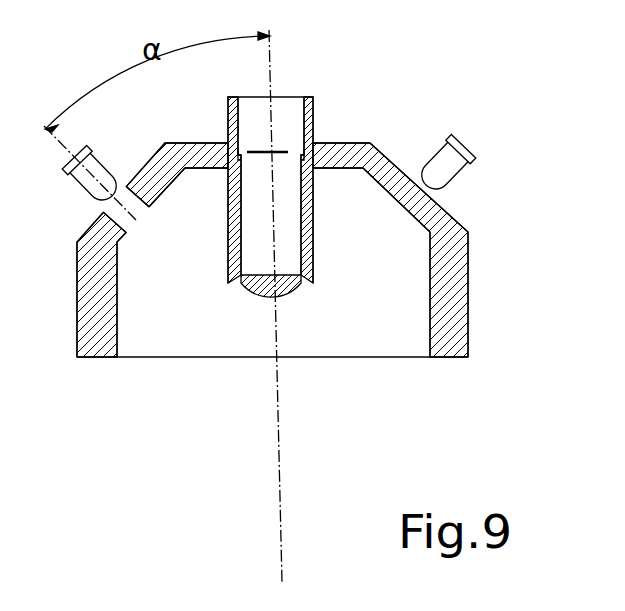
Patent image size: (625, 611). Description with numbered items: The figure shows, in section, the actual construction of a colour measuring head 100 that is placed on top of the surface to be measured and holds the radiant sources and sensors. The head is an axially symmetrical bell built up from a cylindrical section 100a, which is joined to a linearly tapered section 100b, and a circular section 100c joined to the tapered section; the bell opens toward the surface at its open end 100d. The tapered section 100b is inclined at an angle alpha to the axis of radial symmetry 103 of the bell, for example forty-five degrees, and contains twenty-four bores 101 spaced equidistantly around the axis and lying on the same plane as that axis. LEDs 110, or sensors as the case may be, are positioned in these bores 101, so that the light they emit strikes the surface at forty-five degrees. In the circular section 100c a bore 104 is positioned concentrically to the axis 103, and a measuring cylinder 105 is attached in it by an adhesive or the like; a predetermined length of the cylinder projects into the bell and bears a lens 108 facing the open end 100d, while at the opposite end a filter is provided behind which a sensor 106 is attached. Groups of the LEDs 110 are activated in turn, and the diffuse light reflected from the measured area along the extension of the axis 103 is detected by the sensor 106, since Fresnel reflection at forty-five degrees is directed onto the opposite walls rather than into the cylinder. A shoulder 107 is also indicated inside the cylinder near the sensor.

The measuring head 100 is at (470, 266).
The cylindrical section 100a is at (428, 324).
The tapered section 100b is at (382, 186).
The circular section 100c is at (337, 140).
The open end 100d is at (290, 358).
The bore 101 is at (122, 208).
The axis of radial symmetry 103 is at (281, 558).
The bore 104 is at (304, 162).
The measuring cylinder 105 is at (314, 120).
The sensor 106 is at (286, 150).
The shoulder 107 is at (264, 157).
The lens 108 is at (245, 297).
The LED 110 is at (457, 141).